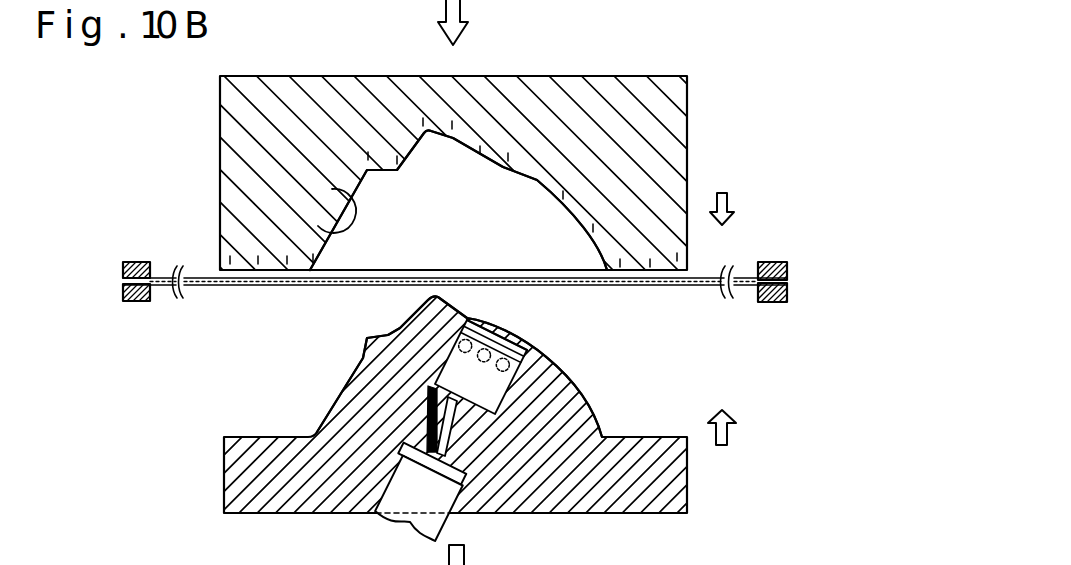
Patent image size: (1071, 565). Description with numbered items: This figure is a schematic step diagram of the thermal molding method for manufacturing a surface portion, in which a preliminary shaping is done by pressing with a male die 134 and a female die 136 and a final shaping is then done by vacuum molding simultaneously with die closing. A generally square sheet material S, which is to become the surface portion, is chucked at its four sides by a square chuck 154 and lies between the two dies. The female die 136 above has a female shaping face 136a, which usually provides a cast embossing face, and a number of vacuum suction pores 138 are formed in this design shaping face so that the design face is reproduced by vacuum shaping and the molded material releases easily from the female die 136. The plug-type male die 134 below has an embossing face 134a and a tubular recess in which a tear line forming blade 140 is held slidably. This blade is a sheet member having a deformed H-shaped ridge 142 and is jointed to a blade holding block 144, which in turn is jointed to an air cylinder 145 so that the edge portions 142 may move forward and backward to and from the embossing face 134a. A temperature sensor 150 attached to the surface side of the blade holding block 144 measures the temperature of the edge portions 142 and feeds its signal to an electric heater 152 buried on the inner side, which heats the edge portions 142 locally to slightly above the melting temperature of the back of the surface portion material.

The male die 134 is at (687, 476).
The embossing face of the male die 134a is at (347, 383).
The female die 136 is at (668, 147).
The female shaping face 136a is at (318, 226).
The vacuum suction pores 138 is at (537, 180).
The tear line forming blade 140 is at (515, 348).
The ridge (edge portions) 142 is at (500, 325).
The blade holding block 144 is at (497, 398).
The air cylinder 145 is at (437, 493).
The temperature sensor 150 is at (490, 320).
The electric heater 152 is at (520, 368).
The chuck (clamp) 154 is at (132, 262).
The sheet material S is at (682, 284).